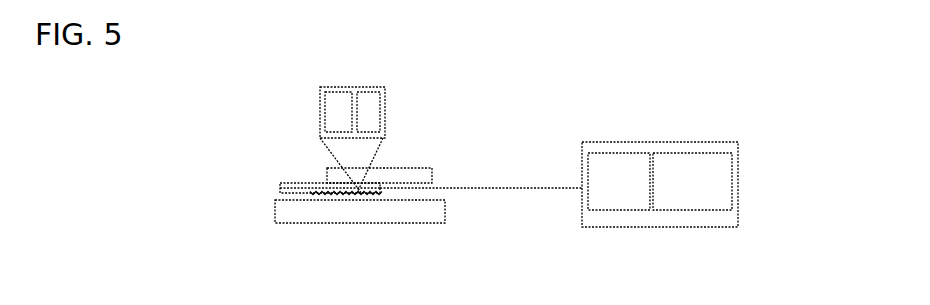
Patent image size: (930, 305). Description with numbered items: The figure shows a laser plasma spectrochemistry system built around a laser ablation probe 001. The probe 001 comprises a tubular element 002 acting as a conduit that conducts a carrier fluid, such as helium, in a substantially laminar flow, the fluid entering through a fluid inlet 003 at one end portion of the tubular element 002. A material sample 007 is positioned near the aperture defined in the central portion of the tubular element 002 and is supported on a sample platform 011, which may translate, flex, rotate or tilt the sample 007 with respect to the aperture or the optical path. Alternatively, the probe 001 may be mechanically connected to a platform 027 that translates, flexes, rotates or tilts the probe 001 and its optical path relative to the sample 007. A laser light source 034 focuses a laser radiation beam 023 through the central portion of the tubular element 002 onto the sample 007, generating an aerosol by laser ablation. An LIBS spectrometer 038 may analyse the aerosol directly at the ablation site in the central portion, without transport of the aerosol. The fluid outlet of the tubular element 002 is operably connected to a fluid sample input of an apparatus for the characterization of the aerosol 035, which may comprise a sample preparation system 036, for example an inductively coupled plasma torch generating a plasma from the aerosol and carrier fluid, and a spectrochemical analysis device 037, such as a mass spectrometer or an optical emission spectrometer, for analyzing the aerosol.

The laser ablation probe 001 is at (361, 224).
The tubular element 002 is at (481, 155).
The fluid inlet 003 is at (270, 188).
The material sample 007 is at (309, 227).
The sample platform 011 is at (415, 213).
The laser radiation beam 023 is at (340, 152).
The platform 027 is at (403, 150).
The laser light source 034 is at (300, 91).
The apparatus for the characterization of the aerosol 035 is at (609, 207).
The sample preparation system 036 is at (681, 156).
The spectrochemical analysis device 037 is at (720, 211).
The LIBS spectrometer 038 is at (440, 102).